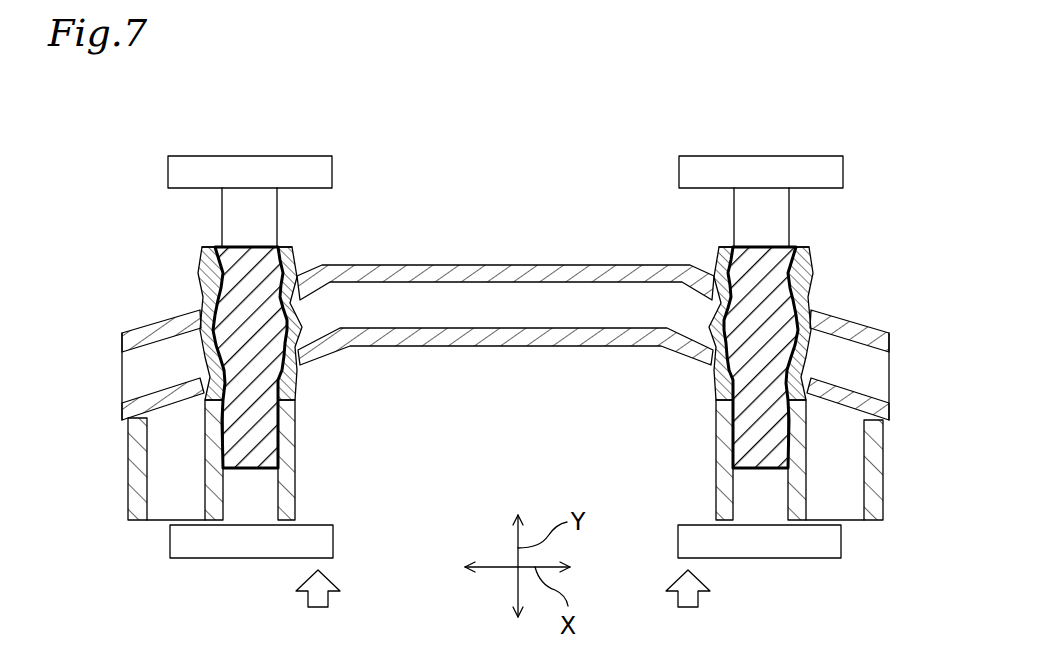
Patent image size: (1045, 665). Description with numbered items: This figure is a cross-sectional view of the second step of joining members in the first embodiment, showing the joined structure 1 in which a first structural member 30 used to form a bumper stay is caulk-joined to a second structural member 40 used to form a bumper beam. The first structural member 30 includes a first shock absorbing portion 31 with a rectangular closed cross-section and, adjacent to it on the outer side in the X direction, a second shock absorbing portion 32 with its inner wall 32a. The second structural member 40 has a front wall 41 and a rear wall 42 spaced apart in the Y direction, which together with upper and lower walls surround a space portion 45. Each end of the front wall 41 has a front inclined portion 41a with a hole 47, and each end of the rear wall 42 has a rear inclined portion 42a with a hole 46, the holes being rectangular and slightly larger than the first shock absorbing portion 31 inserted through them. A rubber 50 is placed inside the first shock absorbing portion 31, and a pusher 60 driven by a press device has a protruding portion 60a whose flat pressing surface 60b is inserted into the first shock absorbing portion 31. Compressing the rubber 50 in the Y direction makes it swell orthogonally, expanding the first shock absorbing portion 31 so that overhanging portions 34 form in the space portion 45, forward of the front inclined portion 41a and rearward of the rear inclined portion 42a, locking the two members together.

The laminated body / composite member 1 is at (160, 196).
The first structural member 30 is at (495, 504).
The first shock absorbing portion 31 is at (287, 527).
The second shock absorbing portion 32 is at (152, 528).
The inner side wall of housing 32a is at (131, 417).
The overhanging portions 34 is at (203, 262).
The second structural member 40 is at (505, 296).
The front wall 41 is at (542, 266).
The front inclined portion 41a is at (128, 342).
The rear wall 42 is at (530, 342).
The rear inclined portion 42a is at (146, 400).
The space portion 45 is at (479, 308).
The hole 46 is at (200, 362).
The hole 47 is at (200, 277).
The rubber 50 is at (268, 460).
The pusher 60 is at (316, 152).
The protruding portion 60a is at (238, 518).
The pressing surface 60b is at (284, 440).